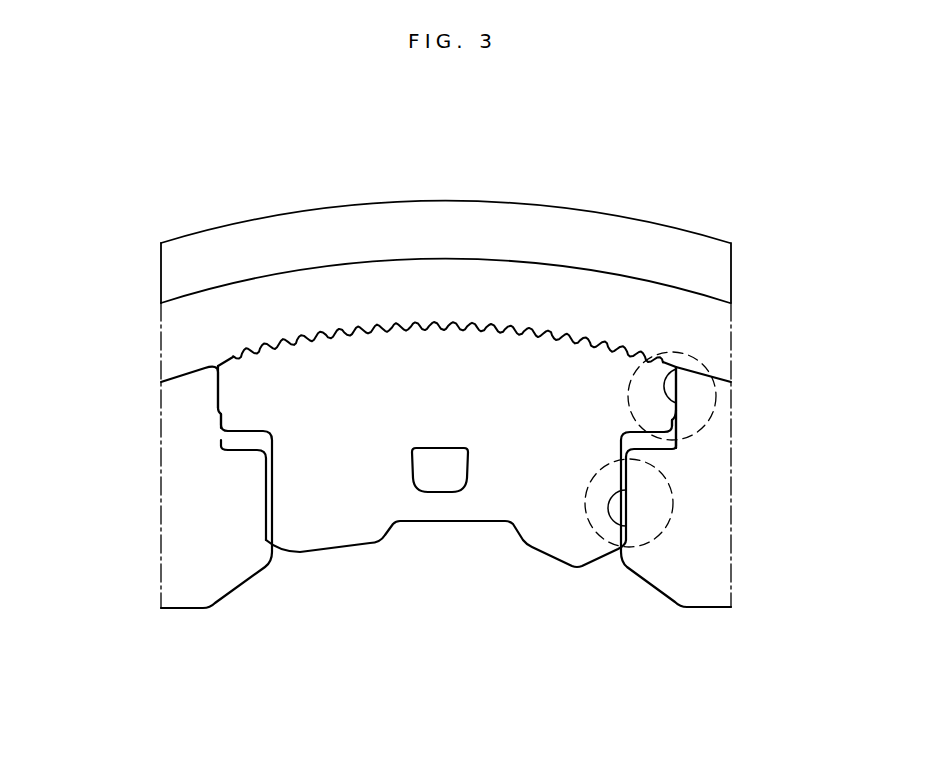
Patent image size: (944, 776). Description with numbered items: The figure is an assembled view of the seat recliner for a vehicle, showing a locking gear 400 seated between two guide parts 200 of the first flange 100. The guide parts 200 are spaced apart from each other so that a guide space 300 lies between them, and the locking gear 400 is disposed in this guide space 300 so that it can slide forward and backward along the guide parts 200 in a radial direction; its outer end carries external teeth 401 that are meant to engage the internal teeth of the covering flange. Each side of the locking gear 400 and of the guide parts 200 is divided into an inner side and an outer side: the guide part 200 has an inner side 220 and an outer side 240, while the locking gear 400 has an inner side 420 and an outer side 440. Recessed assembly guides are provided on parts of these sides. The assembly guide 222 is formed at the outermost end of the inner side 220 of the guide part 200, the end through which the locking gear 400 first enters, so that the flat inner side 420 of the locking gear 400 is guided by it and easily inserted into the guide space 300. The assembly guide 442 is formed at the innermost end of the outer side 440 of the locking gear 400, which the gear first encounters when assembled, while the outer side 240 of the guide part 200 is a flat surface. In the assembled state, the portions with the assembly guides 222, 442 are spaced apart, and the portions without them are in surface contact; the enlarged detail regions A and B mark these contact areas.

The first flange 100 is at (608, 230).
The guide parts 200 is at (657, 577).
The inner side 220 is at (626, 488).
The assembly guide 222 is at (268, 478).
The outer side 240 is at (668, 352).
The guide space 300 is at (460, 584).
The locking gear 400 is at (480, 360).
The gear teeth 401 is at (395, 323).
The inner side 420 is at (675, 446).
The outer side 440 is at (217, 384).
The assembly guide 442 is at (222, 417).
The detail region A is at (717, 408).
The detail region B is at (660, 532).